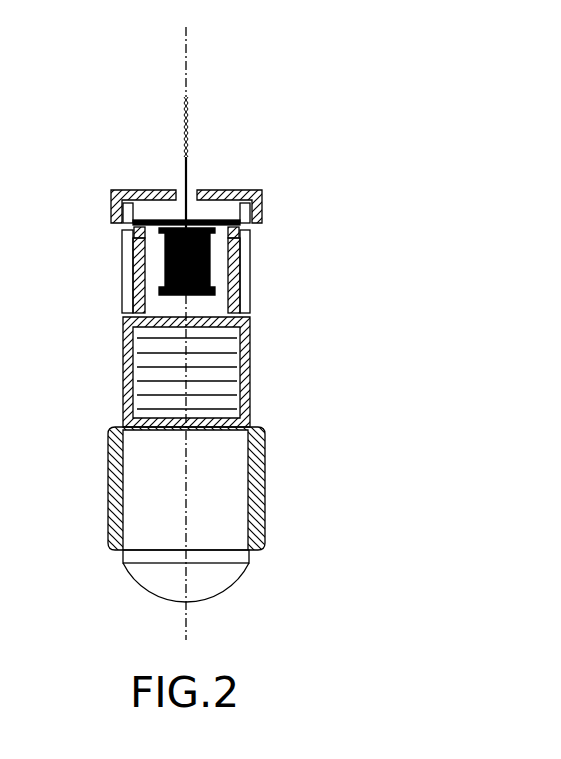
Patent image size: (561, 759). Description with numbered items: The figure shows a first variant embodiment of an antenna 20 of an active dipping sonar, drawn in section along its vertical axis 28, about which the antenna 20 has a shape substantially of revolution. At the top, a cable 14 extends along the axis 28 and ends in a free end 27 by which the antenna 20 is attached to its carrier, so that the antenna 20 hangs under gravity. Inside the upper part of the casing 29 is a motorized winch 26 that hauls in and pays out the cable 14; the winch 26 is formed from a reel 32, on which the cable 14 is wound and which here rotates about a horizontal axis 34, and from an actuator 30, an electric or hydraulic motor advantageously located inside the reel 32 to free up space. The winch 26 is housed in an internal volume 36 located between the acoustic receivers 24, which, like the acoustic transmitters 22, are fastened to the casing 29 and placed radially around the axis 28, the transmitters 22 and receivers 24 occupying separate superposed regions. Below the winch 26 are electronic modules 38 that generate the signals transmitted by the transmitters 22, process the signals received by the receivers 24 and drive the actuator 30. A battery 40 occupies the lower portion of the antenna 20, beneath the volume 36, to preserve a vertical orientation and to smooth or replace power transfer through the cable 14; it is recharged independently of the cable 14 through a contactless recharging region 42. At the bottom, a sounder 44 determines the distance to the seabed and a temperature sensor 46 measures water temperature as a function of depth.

The cable 14 is at (185, 135).
The antenna 20 is at (398, 256).
The acoustic transmitters 22 is at (265, 485).
The acoustic receivers 24 is at (245, 265).
The motorized winch 26 is at (160, 268).
The free end 27 is at (183, 62).
The axis 28 is at (185, 470).
The casing 29 is at (117, 305).
The actuator 30 is at (157, 247).
The reel 32 is at (147, 288).
The horizontal axis 34 is at (233, 250).
The internal volume 36 is at (208, 303).
The electronic modules 38 is at (205, 375).
The battery 40 is at (231, 522).
The recharging region 42 is at (247, 558).
The sounder 44 is at (160, 573).
The temperature sensor 46 is at (222, 580).